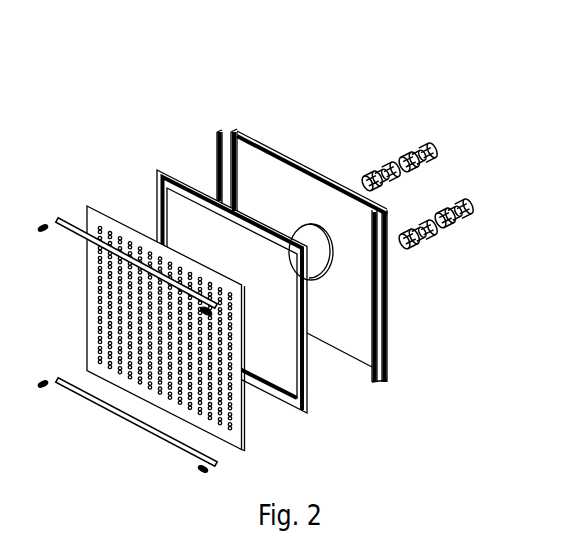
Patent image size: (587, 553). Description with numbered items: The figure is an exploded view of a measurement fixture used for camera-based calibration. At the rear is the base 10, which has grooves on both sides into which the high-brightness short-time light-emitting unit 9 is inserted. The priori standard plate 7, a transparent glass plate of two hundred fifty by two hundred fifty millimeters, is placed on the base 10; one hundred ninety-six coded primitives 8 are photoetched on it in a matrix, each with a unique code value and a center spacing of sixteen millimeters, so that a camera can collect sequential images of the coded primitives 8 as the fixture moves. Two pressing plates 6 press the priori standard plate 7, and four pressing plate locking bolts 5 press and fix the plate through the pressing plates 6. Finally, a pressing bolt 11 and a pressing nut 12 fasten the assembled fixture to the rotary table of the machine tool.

The pressing plate locking bolt 5 is at (37, 216).
The pressing plate 6 is at (232, 464).
The priori standard plate 7 is at (110, 207).
The coded primitive 8 is at (235, 426).
The high-brightness short-time light-emitting unit 9 is at (314, 407).
The base 10 is at (313, 162).
The pressing bolt 11 is at (422, 248).
The pressing nut 12 is at (442, 161).